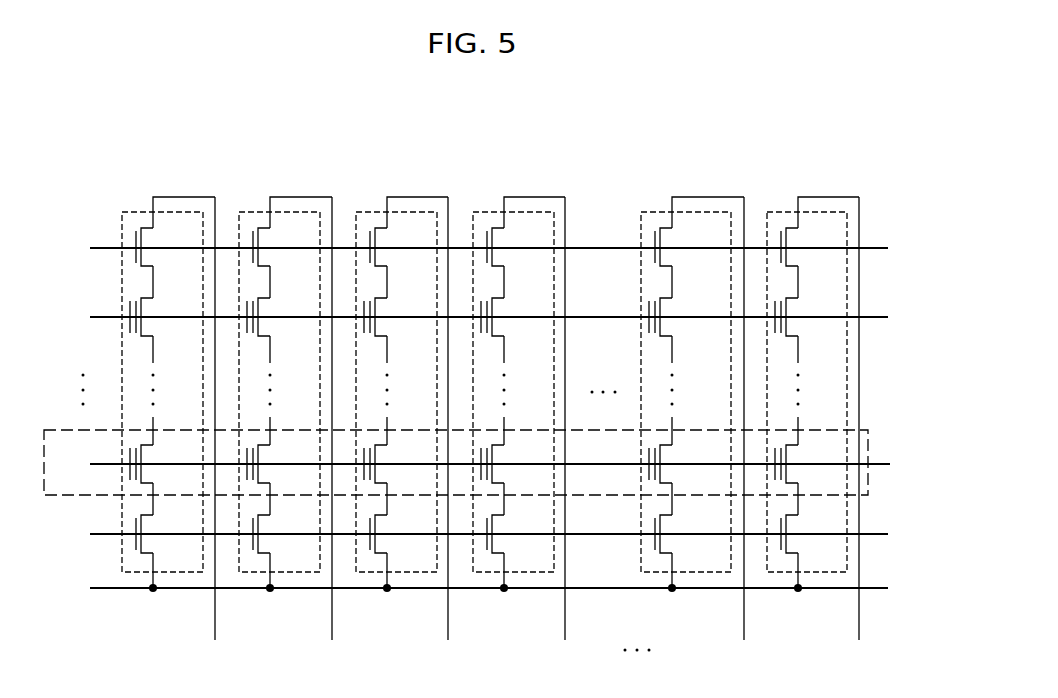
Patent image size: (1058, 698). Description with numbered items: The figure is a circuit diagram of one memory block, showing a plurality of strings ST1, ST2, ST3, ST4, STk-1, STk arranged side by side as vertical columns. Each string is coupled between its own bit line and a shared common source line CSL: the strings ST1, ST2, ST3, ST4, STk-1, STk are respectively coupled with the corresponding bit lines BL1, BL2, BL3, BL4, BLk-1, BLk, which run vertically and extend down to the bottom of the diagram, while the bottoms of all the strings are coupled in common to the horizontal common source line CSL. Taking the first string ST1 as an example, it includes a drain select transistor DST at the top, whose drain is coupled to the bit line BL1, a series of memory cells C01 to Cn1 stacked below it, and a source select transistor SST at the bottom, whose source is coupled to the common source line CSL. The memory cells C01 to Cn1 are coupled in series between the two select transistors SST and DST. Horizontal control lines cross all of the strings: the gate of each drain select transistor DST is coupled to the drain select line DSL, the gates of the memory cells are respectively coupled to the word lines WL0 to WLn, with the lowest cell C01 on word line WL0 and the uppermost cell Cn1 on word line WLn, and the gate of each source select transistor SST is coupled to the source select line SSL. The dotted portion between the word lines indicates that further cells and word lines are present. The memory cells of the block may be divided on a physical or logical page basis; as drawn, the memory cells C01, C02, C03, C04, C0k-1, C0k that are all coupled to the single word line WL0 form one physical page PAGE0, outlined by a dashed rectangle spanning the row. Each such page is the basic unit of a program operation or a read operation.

The string ST1 is at (136, 212).
The string ST2 is at (253, 212).
The string ST3 is at (370, 212).
The string ST4 is at (487, 212).
The string STk-1 is at (655, 212).
The string STk is at (781, 212).
The drain select transistor DST is at (164, 243).
The source select transistor SST is at (164, 529).
The memory cell Cn1 is at (159, 312).
The memory cell C01 is at (160, 459).
The memory cell C02 is at (277, 459).
The memory cell C03 is at (394, 459).
The memory cell C04 is at (511, 459).
The memory cell C0k-1 is at (690, 459).
The memory cell C0k is at (806, 459).
The drain select line DSL is at (471, 248).
The word line WLn is at (471, 316).
The word line WL0 is at (472, 464).
The source select line SSL is at (471, 536).
The common source line CSL is at (471, 591).
The bit line BL1 is at (217, 434).
The bit line BL2 is at (335, 434).
The bit line BL3 is at (452, 434).
The bit line BL4 is at (568, 434).
The bit line BLk-1 is at (754, 434).
The bit line BLk is at (862, 434).
The physical page PAGE0 is at (868, 433).